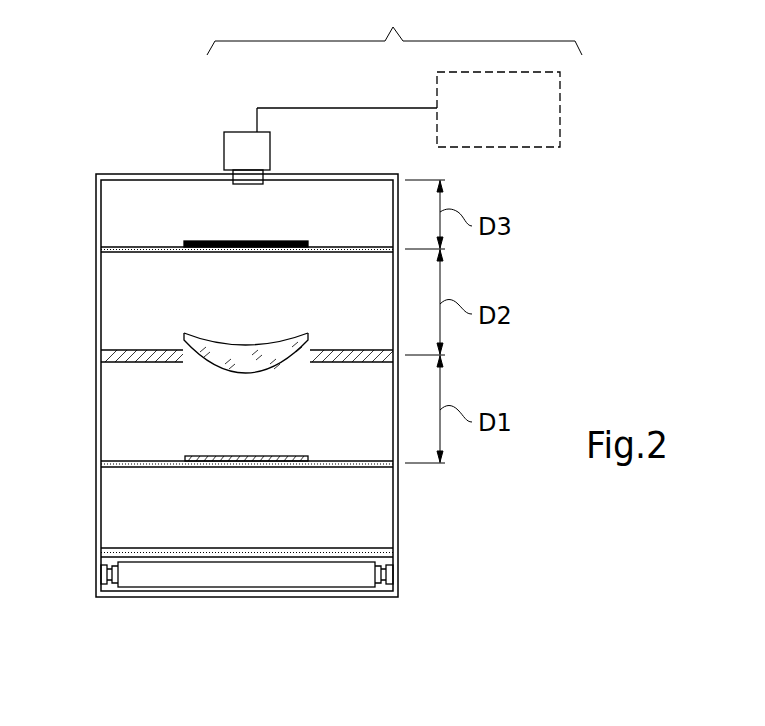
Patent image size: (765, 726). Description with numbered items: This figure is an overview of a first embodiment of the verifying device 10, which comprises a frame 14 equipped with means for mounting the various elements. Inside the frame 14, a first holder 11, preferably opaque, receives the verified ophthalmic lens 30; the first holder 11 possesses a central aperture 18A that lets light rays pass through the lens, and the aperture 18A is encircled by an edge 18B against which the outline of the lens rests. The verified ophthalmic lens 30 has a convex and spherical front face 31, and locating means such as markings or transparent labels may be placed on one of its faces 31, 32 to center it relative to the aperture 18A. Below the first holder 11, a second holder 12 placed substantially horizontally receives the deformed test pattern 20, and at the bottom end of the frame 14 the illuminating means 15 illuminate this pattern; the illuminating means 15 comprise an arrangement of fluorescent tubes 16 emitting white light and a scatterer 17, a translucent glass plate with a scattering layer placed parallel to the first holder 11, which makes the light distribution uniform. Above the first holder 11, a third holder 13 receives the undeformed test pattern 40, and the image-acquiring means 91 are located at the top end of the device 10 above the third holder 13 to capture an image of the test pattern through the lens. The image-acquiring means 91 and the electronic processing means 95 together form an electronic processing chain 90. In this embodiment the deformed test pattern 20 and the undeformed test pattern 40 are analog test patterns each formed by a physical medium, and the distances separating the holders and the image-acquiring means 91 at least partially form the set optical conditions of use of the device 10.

The verifying device 10 is at (485, 536).
The first holder 11 is at (247, 352).
The second holder 12 is at (137, 458).
The third holder 13 is at (130, 245).
The frame 14 is at (97, 412).
The illuminating means 15 is at (216, 570).
The fluorescent tubes 16 is at (218, 577).
The scatterer 17 is at (137, 550).
The aperture 18A is at (205, 378).
The edge 18B is at (310, 344).
The deformed test pattern 20 is at (283, 456).
The verified ophthalmic lens 30 is at (279, 352).
The front face 31 is at (235, 377).
The face 32 is at (280, 340).
The undeformed test pattern 40 is at (286, 241).
The electronic processing chain 90 is at (389, 92).
The image-acquiring means 91 is at (224, 150).
The electronic processing means 95 is at (560, 105).